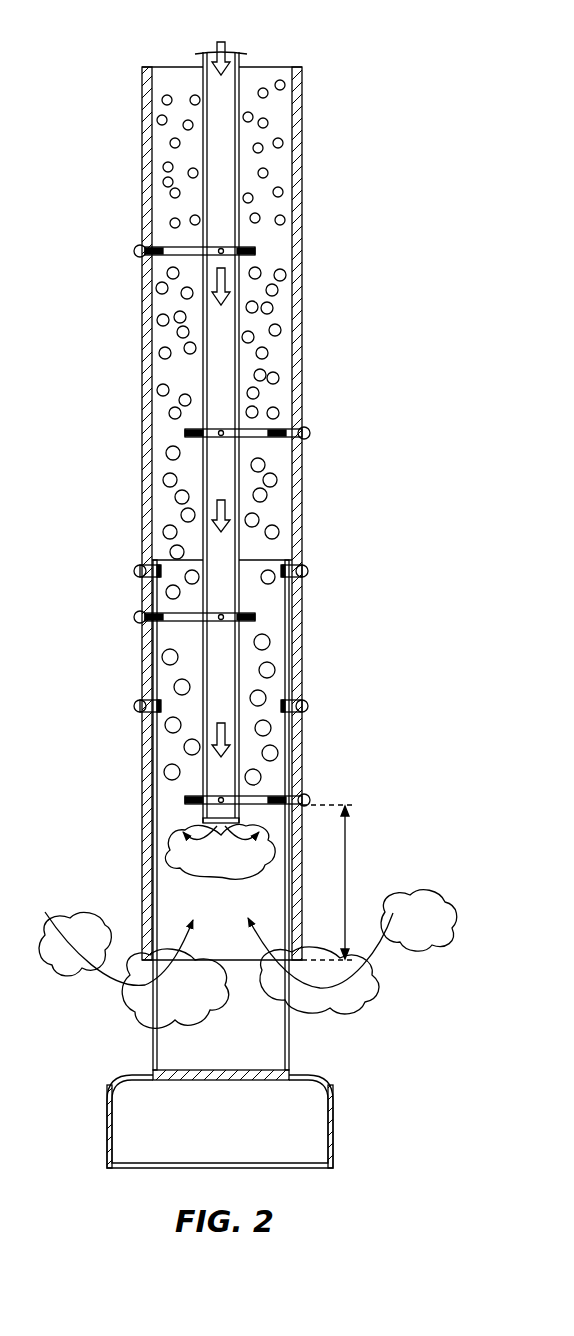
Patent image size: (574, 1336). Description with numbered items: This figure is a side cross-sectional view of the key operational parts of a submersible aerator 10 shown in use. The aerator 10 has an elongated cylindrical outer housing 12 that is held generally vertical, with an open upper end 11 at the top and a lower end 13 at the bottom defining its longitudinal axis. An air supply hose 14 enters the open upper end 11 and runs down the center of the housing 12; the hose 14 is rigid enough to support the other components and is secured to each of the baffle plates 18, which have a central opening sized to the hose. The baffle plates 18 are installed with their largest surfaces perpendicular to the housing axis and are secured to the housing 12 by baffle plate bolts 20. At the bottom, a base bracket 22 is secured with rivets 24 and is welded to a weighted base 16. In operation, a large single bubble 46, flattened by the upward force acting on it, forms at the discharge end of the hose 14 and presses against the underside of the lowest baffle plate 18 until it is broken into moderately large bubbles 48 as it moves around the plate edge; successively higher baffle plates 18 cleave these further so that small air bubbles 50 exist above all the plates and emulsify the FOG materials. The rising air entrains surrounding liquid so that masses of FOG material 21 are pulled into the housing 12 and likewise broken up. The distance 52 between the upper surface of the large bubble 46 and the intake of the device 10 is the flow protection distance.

The submersible aerator 10 is at (342, 80).
The open upper end 11 is at (268, 64).
The elongated cylindrical outer housing 12 is at (302, 303).
The lower end 13 is at (242, 962).
The air supply hose 14 is at (203, 387).
The weighted base 16 is at (110, 1117).
The baffle plates 18 is at (270, 445).
The baffle plate bolts 20 is at (308, 433).
The masses of FOG material 21 is at (432, 947).
The base bracket 22 is at (153, 1043).
The rivets 24 is at (135, 570).
The large single bubble 46 is at (172, 848).
The moderately large bubbles 48 is at (275, 528).
The small air bubbles 50 is at (260, 146).
The distance 52 is at (345, 882).